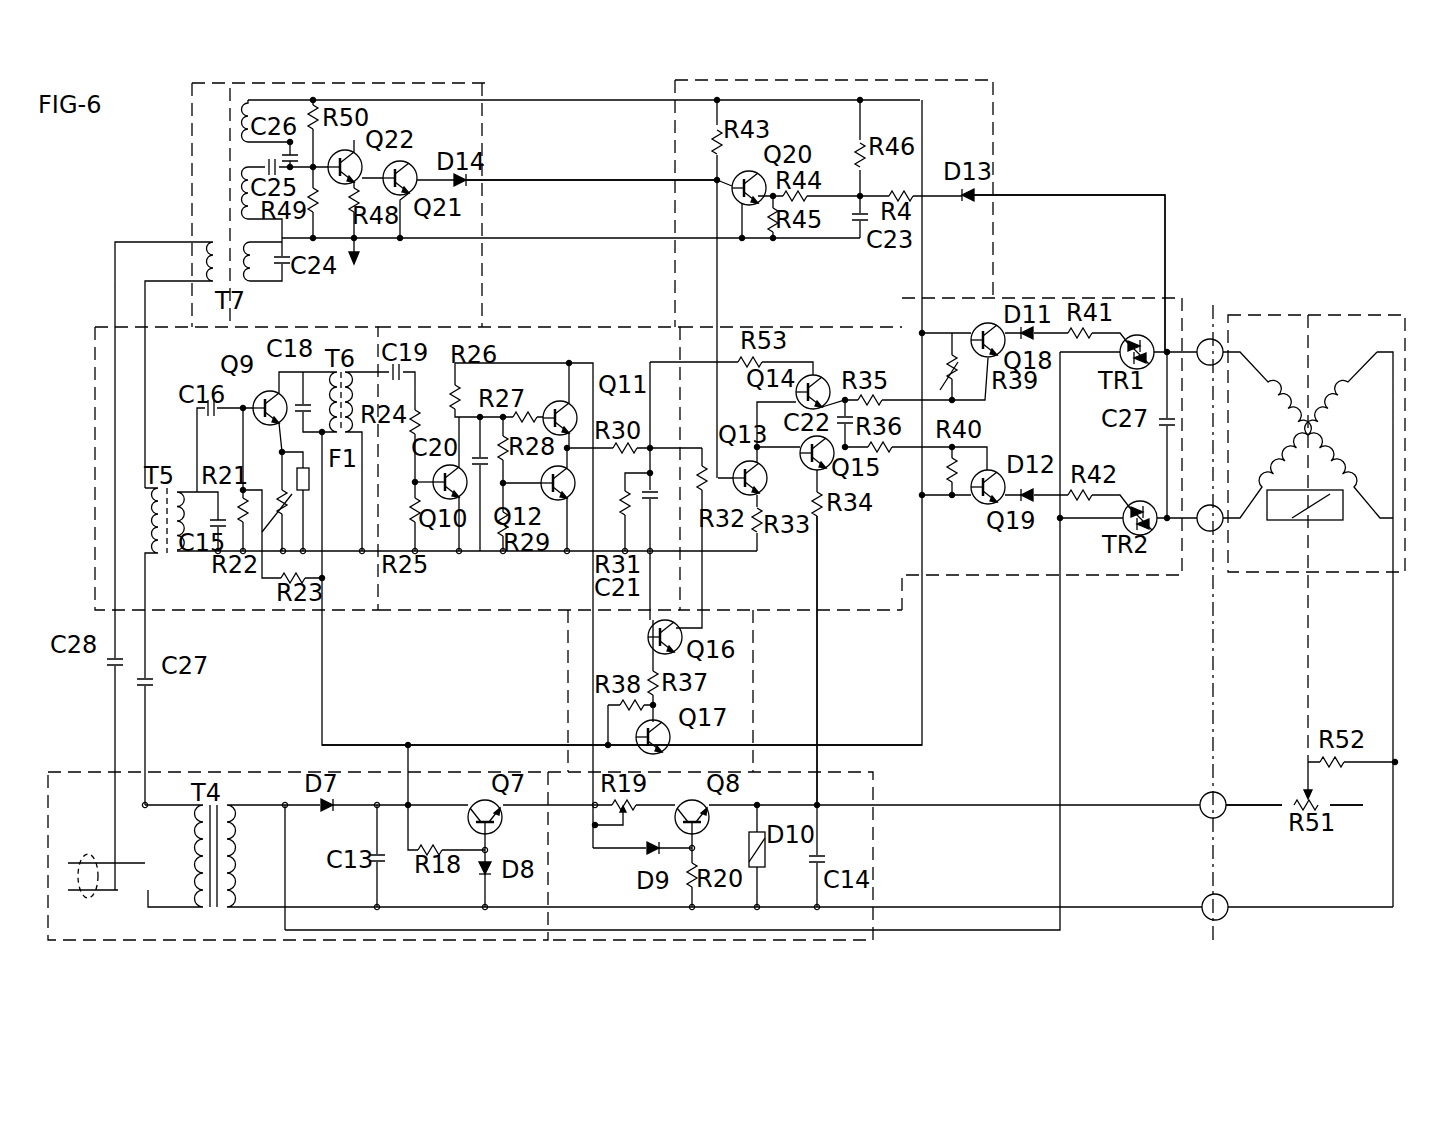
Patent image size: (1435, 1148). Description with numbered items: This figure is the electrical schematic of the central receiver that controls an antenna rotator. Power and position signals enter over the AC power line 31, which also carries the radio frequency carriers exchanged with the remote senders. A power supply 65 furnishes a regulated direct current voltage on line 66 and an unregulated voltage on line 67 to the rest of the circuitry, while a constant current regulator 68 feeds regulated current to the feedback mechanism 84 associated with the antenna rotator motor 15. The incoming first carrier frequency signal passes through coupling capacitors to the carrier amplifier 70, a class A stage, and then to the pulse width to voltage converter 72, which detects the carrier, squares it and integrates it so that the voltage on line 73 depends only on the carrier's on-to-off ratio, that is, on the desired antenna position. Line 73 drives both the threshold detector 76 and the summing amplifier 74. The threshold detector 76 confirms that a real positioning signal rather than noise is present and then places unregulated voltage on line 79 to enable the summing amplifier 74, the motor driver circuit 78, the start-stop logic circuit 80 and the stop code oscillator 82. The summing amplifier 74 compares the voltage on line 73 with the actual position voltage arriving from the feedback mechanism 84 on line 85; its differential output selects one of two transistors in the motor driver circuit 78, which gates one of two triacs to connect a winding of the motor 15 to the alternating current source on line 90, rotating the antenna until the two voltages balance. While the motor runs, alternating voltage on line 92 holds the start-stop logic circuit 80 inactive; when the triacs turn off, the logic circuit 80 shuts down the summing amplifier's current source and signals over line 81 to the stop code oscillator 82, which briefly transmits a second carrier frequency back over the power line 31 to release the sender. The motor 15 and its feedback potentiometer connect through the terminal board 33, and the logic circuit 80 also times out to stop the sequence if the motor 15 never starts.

The antenna rotator motor 15 is at (1355, 316).
The AC power line 31 is at (89, 855).
The terminal board 33 is at (1213, 305).
The power supply 65 is at (102, 772).
The regulated voltage line 66 is at (586, 585).
The unregulated voltage line 67 is at (408, 745).
The constant current regulator 68 is at (873, 782).
The carrier amplifier 70 is at (100, 327).
The pulse width to voltage converter 72 is at (530, 327).
The output line of pulse width to voltage converter 73 is at (664, 491).
The summing amplifier 74 is at (760, 327).
The threshold detector 76 is at (568, 663).
The motor driver circuit 78 is at (1078, 282).
The threshold detector output line 79 is at (767, 740).
The start-stop logic circuit 80 is at (993, 84).
The start-stop logic output line 81 is at (554, 180).
The stop code oscillator 82 is at (488, 83).
The feedback mechanism 84 is at (1271, 751).
The feedback voltage line 85 is at (820, 703).
The alternating current line 90 is at (1060, 683).
The motor voltage sensing line 92 is at (1080, 195).